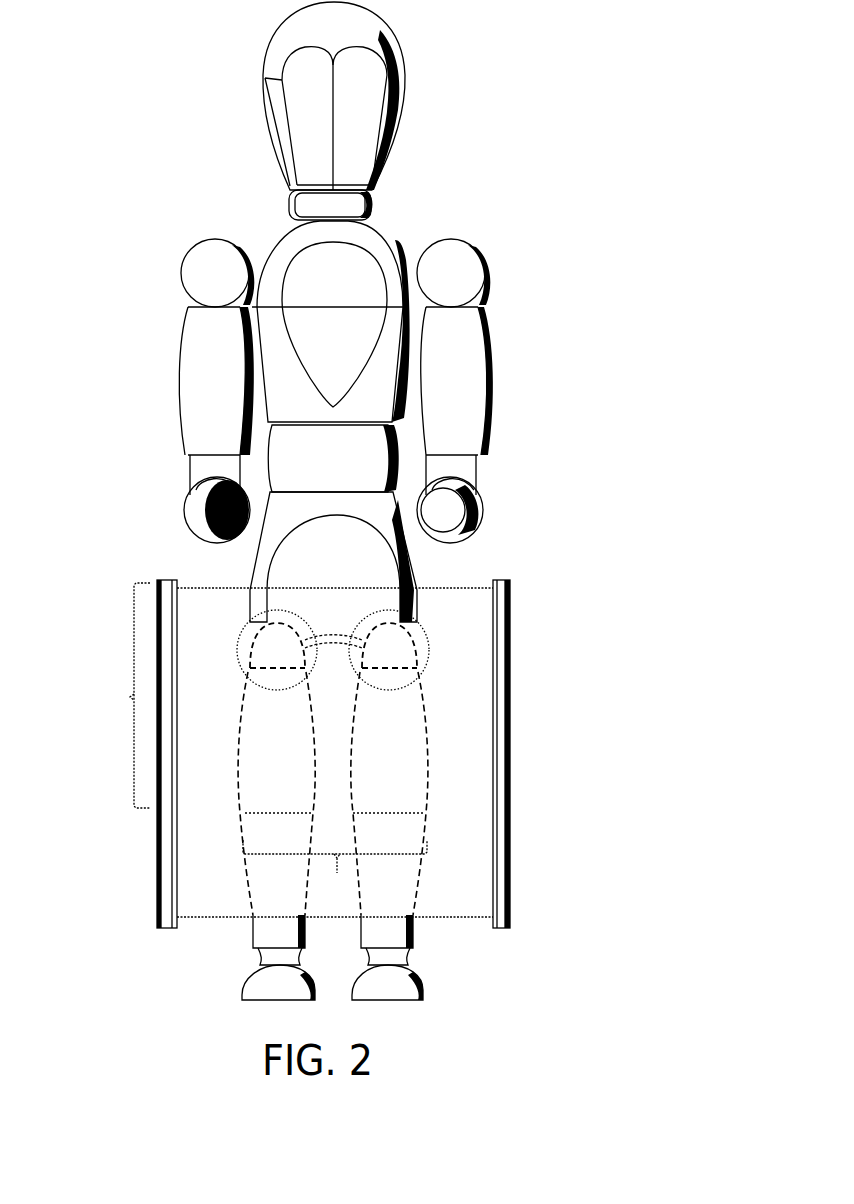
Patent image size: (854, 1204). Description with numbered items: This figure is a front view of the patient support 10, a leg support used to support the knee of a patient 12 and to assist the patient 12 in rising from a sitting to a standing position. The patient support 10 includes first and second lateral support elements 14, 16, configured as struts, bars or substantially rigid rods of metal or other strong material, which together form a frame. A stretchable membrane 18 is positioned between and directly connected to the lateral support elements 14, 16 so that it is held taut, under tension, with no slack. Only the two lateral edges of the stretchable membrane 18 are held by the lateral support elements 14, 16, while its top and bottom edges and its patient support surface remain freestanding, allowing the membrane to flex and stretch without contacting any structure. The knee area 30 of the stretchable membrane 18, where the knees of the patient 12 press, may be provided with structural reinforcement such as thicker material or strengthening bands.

The patient support 10 is at (629, 585).
The patient 12 is at (576, 211).
The first lateral support element 14 is at (510, 823).
The second lateral support element 16 is at (160, 862).
The stretchable membrane 18 is at (493, 917).
The knee area 30 is at (134, 697).